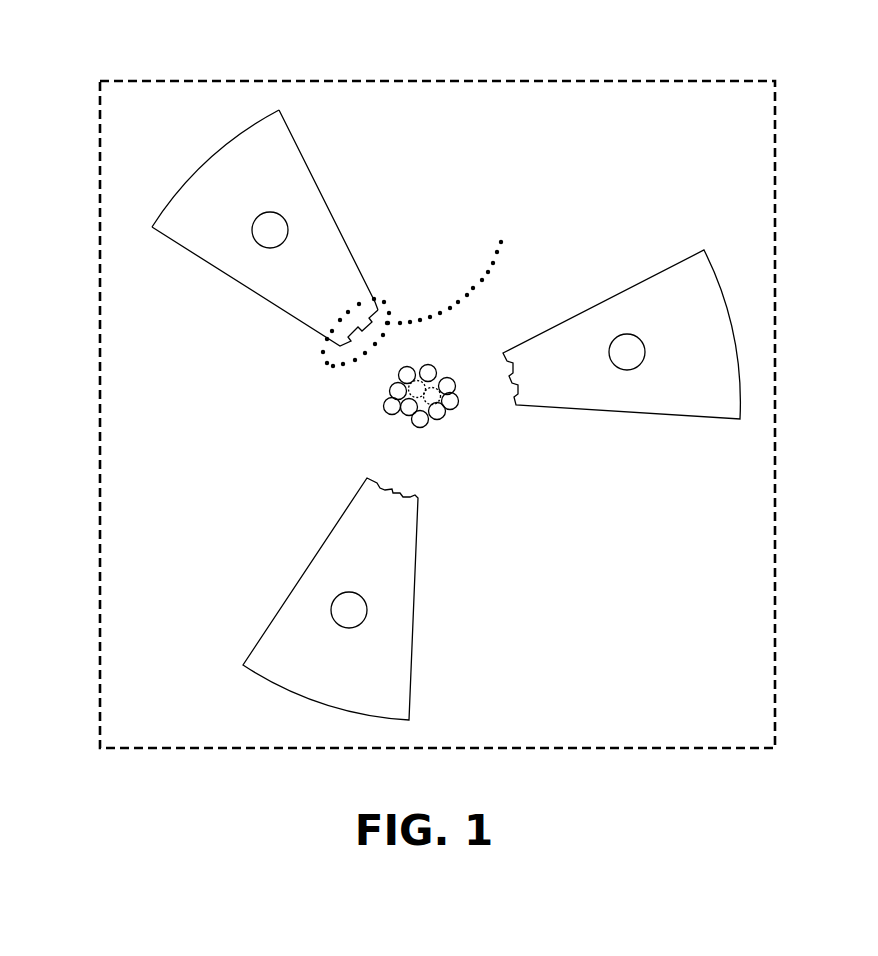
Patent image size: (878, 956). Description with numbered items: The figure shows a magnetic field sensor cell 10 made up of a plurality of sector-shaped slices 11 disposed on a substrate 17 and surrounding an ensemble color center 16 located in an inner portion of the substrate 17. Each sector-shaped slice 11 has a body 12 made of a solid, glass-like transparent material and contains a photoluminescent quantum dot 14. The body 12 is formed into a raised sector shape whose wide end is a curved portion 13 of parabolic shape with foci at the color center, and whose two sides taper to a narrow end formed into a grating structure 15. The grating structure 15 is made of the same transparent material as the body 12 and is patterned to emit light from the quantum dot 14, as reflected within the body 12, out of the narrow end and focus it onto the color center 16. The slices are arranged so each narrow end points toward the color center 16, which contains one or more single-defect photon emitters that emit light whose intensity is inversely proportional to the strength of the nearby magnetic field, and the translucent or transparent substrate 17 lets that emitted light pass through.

The magnetic field sensor cell 10 is at (203, 54).
The sector-shaped slice 11 is at (442, 405).
The body 12 is at (287, 236).
The curved portion 13 is at (208, 158).
The photoluminescent quantum dot 14 is at (270, 237).
The grating structure 15 is at (419, 284).
The ensemble color center 16 is at (443, 417).
The substrate 17 is at (737, 146).